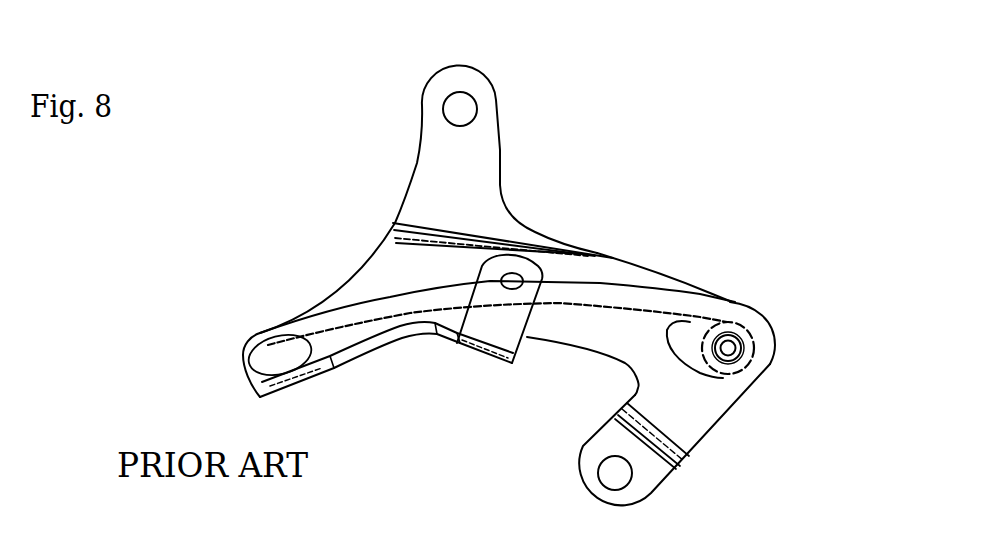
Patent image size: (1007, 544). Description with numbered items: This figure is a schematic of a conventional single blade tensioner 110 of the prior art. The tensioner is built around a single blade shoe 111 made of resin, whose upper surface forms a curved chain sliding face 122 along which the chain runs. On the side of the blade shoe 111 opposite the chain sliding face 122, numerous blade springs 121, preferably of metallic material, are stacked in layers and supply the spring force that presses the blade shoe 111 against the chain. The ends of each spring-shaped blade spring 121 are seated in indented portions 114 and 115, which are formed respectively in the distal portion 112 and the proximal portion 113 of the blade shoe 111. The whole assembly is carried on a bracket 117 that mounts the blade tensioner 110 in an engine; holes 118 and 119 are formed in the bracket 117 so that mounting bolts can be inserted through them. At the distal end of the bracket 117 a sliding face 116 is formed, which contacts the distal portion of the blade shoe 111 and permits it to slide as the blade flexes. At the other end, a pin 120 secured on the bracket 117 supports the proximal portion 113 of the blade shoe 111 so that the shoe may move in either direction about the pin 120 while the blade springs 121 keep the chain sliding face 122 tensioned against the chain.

The blade tensioner 110 is at (722, 110).
The blade shoe 111 is at (361, 306).
The distal portion 112 is at (255, 363).
The proximal portion 113 is at (721, 376).
The indented portion 114 is at (270, 349).
The indented portion 115 is at (728, 318).
The sliding face 116 is at (290, 379).
The bracket 117 is at (703, 413).
The hole 118 is at (615, 468).
The hole 119 is at (462, 105).
The pin 120 is at (737, 348).
The blade springs 121 is at (637, 277).
The chain sliding face 122 is at (418, 290).